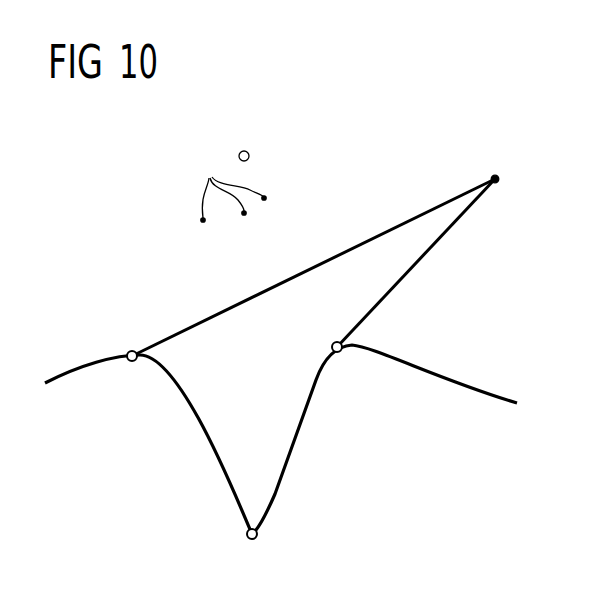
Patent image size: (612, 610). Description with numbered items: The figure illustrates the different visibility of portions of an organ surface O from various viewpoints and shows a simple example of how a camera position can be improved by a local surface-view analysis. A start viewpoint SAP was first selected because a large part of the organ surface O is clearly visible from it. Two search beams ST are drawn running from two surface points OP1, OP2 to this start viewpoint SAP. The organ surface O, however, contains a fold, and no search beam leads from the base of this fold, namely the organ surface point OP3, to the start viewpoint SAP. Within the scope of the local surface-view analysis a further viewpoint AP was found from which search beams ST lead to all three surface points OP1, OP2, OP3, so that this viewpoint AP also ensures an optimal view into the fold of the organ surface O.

The viewpoint AP is at (245, 151).
The search beams ST is at (424, 254).
The start viewpoint SAP is at (495, 177).
The surface point OP1 is at (337, 352).
The surface point OP2 is at (132, 361).
The organ surface point OP3 is at (252, 539).
The organ surface O is at (483, 391).